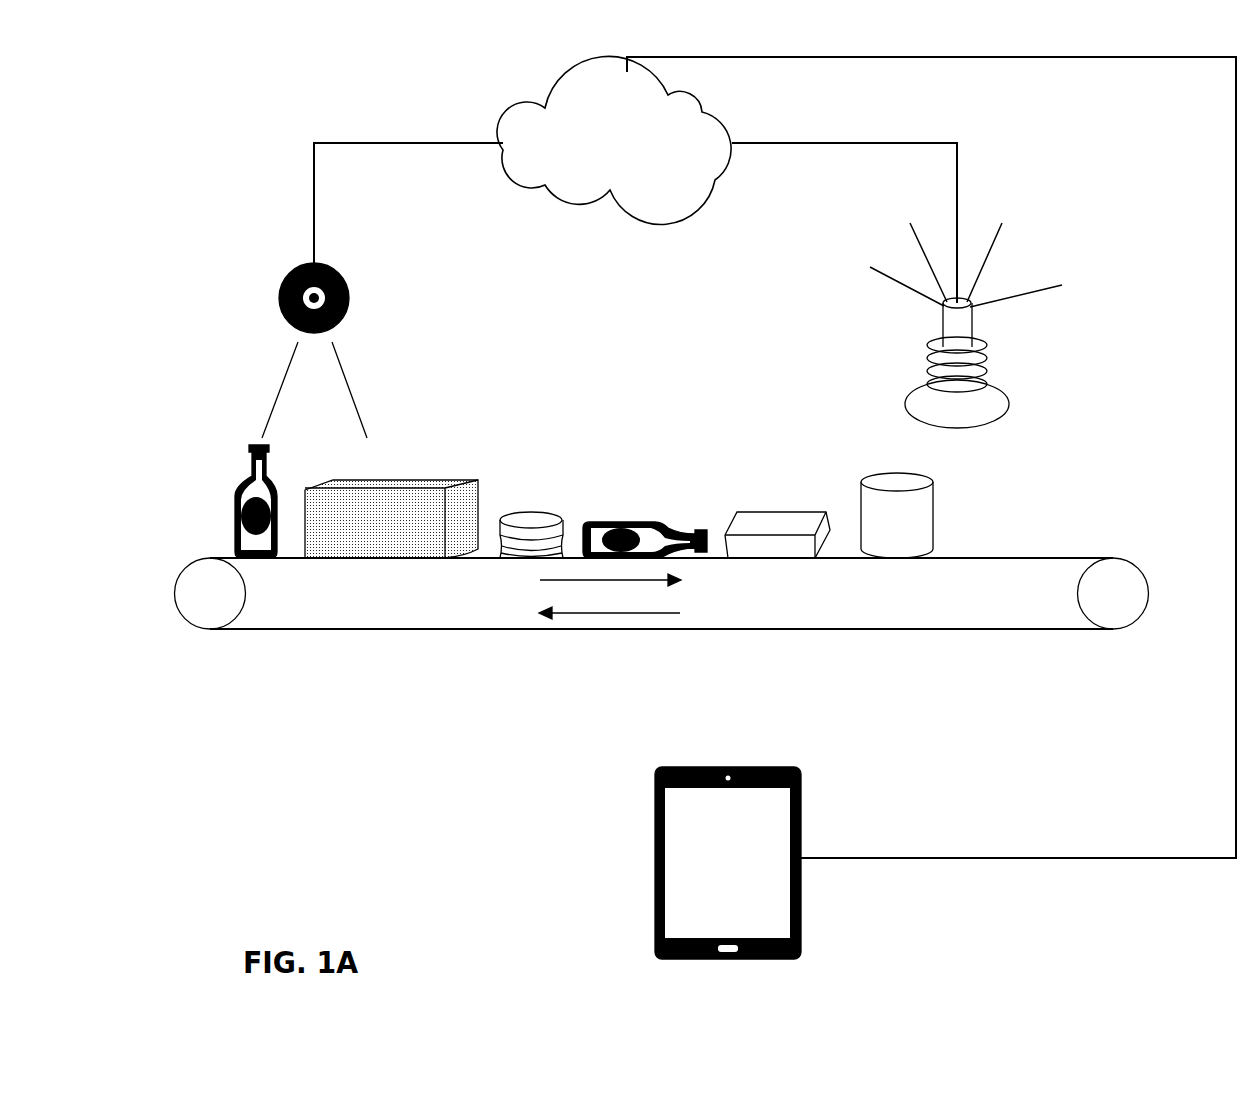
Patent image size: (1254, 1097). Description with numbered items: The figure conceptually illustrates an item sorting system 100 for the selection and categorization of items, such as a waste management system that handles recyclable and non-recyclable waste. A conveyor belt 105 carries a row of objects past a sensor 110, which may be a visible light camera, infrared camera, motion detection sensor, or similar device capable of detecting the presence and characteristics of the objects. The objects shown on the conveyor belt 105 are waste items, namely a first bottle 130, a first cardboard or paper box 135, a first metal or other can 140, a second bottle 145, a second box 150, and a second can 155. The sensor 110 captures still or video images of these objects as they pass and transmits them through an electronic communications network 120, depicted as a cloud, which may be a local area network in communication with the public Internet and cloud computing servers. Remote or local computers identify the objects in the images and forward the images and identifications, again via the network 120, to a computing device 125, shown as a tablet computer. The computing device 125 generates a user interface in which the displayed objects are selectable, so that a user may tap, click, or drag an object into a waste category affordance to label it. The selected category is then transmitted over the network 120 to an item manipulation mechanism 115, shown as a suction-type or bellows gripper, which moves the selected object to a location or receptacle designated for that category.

The item sorting system 100 is at (232, 79).
The conveyor belt 105 is at (356, 632).
The sensor 110 is at (290, 282).
The item manipulation mechanism 115 is at (916, 392).
The electronic communications network 120 is at (558, 112).
The computing device 125 is at (692, 768).
The bottle 130 is at (243, 480).
The cardboard or other paper box 135 is at (443, 488).
The metal or other can 140 is at (555, 516).
The bottle 145 is at (653, 522).
The cardboard or other paper box 150 is at (808, 512).
The metal or other can 155 is at (878, 470).